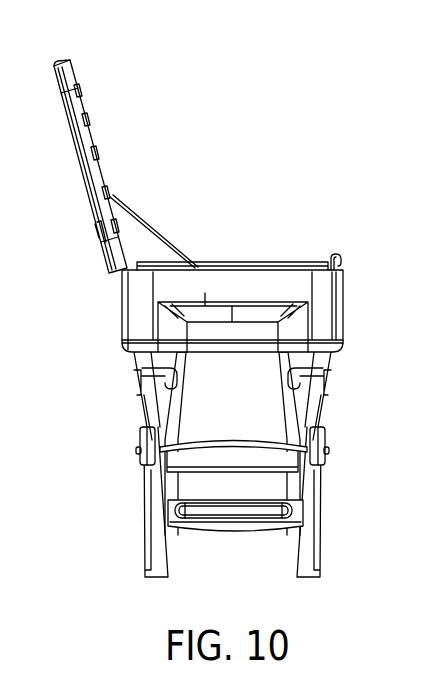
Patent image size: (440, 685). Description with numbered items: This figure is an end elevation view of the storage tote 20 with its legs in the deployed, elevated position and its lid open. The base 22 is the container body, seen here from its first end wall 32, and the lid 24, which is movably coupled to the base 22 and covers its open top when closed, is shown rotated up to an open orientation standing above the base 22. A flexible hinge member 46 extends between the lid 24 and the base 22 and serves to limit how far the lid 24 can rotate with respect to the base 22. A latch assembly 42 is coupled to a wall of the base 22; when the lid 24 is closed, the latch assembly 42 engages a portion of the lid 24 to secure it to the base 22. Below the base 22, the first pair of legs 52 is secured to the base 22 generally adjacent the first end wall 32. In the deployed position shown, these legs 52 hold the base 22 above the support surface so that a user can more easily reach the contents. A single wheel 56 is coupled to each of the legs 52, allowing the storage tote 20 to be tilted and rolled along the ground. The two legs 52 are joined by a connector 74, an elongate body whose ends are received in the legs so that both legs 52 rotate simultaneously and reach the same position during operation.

The storage tote 20 is at (219, 188).
The base 22 is at (236, 295).
The lid 24 is at (68, 73).
The first end wall 32 is at (148, 302).
The latch assembly 42 is at (343, 257).
The flexible hinge member 46 is at (155, 228).
The first pair of legs 52 is at (150, 557).
The wheel 56 is at (142, 470).
The connector 74 is at (230, 517).